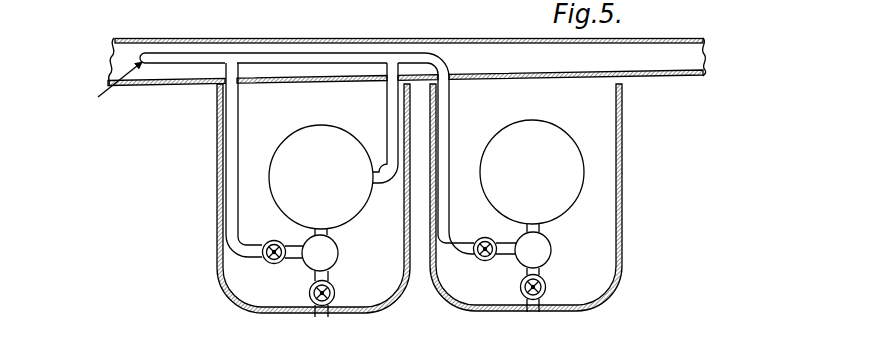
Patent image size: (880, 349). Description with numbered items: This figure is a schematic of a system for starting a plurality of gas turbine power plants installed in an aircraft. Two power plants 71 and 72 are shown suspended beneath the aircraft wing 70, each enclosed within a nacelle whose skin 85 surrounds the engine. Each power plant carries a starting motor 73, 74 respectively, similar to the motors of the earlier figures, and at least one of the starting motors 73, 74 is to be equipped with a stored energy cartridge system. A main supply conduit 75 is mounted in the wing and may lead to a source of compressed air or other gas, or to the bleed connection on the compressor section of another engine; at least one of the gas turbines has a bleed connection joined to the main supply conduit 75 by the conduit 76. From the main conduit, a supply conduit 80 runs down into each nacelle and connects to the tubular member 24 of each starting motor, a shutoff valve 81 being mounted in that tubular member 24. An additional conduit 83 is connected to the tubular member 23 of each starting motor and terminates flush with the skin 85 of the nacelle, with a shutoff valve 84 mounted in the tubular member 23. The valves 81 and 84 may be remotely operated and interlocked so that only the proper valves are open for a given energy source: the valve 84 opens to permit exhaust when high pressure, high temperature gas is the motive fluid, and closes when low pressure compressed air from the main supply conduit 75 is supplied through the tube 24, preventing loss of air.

The aircraft wing 70 is at (525, 80).
The power plant 71 is at (320, 126).
The power plant 72 is at (563, 143).
The starting motor 73 is at (288, 321).
The starting motor 74 is at (547, 243).
The main supply conduit 75 is at (328, 52).
The conduit 76 is at (387, 113).
The supply conduit 80 is at (238, 142).
The shutoff valve 81 is at (279, 241).
The tubular member 23 is at (330, 276).
The tubular member 24 is at (292, 259).
The additional conduit 83 is at (318, 315).
The shutoff valve 84 is at (336, 289).
The skin 85 is at (388, 297).